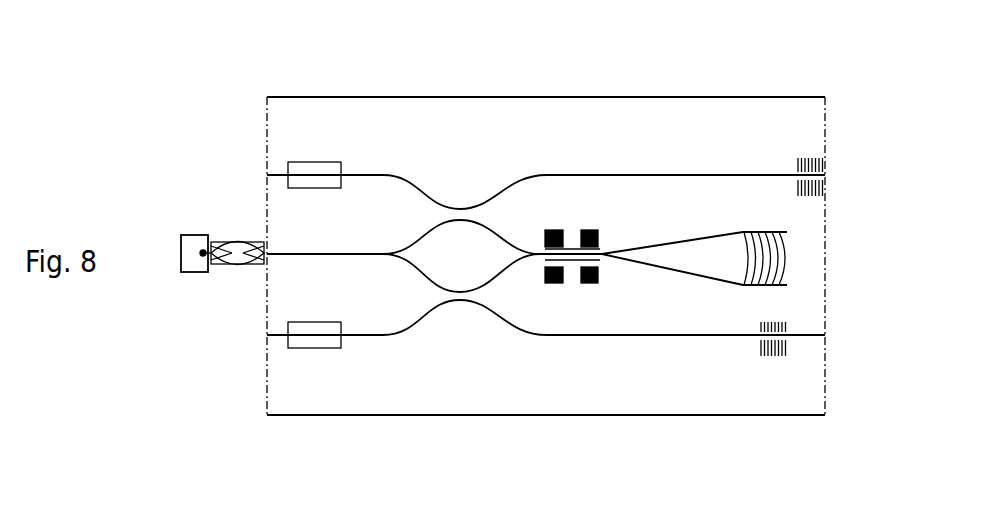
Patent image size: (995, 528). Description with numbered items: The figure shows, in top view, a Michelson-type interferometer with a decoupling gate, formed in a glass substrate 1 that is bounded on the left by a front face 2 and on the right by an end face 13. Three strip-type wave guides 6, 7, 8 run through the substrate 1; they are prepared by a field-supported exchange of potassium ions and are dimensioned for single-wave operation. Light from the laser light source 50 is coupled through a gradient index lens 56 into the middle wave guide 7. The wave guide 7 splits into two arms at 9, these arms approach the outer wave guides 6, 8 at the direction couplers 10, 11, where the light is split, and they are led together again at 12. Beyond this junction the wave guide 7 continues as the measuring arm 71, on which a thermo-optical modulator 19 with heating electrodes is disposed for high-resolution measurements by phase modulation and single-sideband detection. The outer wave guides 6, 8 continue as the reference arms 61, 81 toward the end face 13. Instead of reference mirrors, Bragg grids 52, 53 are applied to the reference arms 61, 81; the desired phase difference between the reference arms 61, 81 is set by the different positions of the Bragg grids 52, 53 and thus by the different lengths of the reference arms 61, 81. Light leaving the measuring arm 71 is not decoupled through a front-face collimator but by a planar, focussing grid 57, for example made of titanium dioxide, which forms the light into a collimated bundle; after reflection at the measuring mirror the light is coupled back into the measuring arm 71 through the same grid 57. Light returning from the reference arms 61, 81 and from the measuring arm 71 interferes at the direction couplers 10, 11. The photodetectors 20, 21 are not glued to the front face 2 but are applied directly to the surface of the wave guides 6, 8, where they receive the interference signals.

The glass substrate 1 is at (590, 106).
The front face 2 is at (267, 136).
The wave guide 6 is at (280, 171).
The wave guide 7 is at (287, 251).
The wave guide 8 is at (279, 331).
The split of wave guide 7 9 is at (366, 262).
The direction coupler 10 is at (467, 206).
The direction coupler 11 is at (464, 308).
The junction of arms 12 is at (541, 251).
The end face 13 is at (826, 118).
The thermo-optical modulator 19 is at (547, 288).
The photodetector 20 is at (313, 160).
The photodetector 21 is at (368, 248).
The laser light source 50 is at (196, 266).
The Bragg grid 52 is at (814, 165).
The Bragg grid 53 is at (773, 314).
The gradient index lens 56 is at (243, 268).
The planar focussing grid 57 is at (744, 290).
The reference arm 61 is at (704, 172).
The measuring arm 71 is at (661, 253).
The reference arm 81 is at (668, 342).